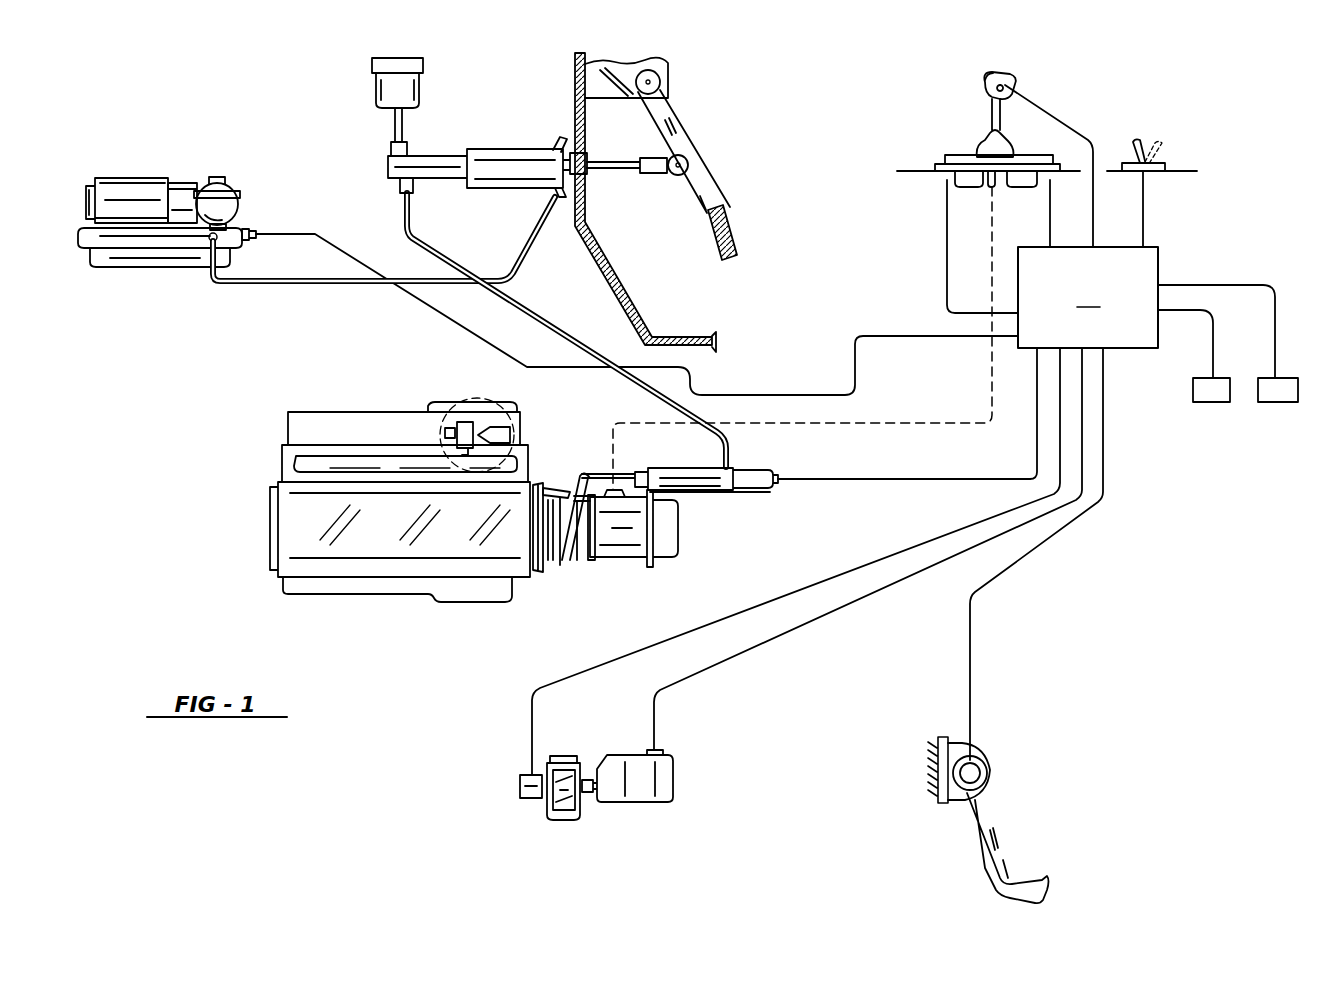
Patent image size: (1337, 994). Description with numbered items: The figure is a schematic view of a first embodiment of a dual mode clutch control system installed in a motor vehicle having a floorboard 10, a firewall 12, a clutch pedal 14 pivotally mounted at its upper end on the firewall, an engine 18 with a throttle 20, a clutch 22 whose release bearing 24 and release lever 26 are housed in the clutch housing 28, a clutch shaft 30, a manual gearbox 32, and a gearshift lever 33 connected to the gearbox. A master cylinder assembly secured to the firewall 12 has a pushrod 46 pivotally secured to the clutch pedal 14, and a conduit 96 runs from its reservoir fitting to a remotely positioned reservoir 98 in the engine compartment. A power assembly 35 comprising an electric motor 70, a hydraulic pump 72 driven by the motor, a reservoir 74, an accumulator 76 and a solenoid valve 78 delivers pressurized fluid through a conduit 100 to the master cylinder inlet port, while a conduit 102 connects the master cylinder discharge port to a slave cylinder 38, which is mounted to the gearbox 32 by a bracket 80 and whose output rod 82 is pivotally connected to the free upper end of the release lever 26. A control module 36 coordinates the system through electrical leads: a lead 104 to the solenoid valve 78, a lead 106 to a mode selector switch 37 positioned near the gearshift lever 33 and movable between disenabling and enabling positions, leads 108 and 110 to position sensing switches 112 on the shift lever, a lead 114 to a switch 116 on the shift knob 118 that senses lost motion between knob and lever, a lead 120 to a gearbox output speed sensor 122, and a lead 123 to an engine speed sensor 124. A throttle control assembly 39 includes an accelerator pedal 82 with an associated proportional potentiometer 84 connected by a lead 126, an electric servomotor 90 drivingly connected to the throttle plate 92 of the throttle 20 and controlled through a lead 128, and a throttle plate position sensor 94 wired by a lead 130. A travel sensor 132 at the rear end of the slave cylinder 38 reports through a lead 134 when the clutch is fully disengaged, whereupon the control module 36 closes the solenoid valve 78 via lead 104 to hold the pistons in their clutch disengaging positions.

The floorboard 10 is at (690, 340).
The firewall 12 is at (587, 192).
The clutch pedal 14 is at (690, 125).
The engine 18 is at (370, 420).
The throttle 20 is at (465, 421).
The clutch 22 is at (548, 468).
The release bearing 24 is at (553, 550).
The release lever 26 is at (553, 516).
The housing 28 is at (574, 488).
The clutch shaft 30 is at (580, 548).
The manual gearbox 32 is at (646, 565).
The gearshift lever 33 is at (990, 118).
The power assembly 35 is at (150, 294).
The control module 36 is at (1088, 297).
The mode selector switch 37 is at (1158, 149).
The slave cylinder 38 is at (699, 462).
The throttle control assembly 39 is at (682, 746).
The pushrod 46 is at (622, 162).
The electric motor 70 is at (142, 190).
The hydraulic pump 72 is at (182, 187).
The reservoir 74 is at (178, 263).
The accumulator 76 is at (226, 188).
The solenoid valve 78 is at (257, 232).
The bracket 80 is at (676, 493).
The output rod / accelerator pedal 82 is at (600, 488).
The proportional potentiometer 84 is at (978, 757).
The electric servomotor 90 is at (675, 776).
The throttle plate 92 is at (578, 766).
The throttle plate position sensor 94 is at (520, 786).
The conduit 96 is at (393, 128).
The reservoir 98 is at (374, 90).
The conduit 100 is at (350, 285).
The conduit 102 is at (530, 308).
The lead 104 is at (910, 335).
The lead 106 is at (1147, 208).
The lead 108 is at (946, 240).
The lead 110 is at (1048, 228).
The position sensing switches 112 is at (970, 186).
The lead 114 is at (1096, 230).
The switch 116 is at (1016, 82).
The shift knob 118 is at (986, 77).
The lead 120 is at (1215, 338).
The gearbox output speed sensor 122 is at (1210, 402).
The lead 123 is at (1265, 283).
The engine speed sensor 124 is at (1277, 402).
The lead 126 is at (1005, 573).
The lead 128 is at (767, 641).
The lead 130 is at (668, 639).
The travel sensor 132 is at (774, 477).
The lead 134 is at (965, 478).